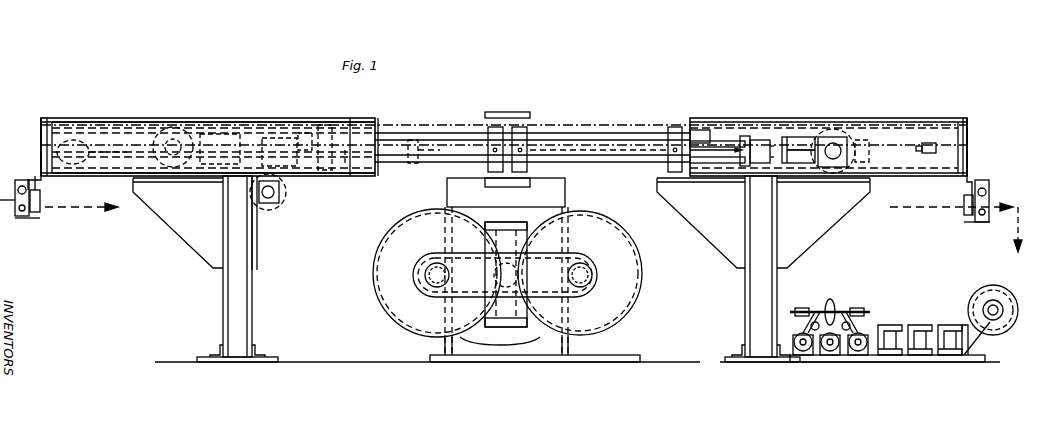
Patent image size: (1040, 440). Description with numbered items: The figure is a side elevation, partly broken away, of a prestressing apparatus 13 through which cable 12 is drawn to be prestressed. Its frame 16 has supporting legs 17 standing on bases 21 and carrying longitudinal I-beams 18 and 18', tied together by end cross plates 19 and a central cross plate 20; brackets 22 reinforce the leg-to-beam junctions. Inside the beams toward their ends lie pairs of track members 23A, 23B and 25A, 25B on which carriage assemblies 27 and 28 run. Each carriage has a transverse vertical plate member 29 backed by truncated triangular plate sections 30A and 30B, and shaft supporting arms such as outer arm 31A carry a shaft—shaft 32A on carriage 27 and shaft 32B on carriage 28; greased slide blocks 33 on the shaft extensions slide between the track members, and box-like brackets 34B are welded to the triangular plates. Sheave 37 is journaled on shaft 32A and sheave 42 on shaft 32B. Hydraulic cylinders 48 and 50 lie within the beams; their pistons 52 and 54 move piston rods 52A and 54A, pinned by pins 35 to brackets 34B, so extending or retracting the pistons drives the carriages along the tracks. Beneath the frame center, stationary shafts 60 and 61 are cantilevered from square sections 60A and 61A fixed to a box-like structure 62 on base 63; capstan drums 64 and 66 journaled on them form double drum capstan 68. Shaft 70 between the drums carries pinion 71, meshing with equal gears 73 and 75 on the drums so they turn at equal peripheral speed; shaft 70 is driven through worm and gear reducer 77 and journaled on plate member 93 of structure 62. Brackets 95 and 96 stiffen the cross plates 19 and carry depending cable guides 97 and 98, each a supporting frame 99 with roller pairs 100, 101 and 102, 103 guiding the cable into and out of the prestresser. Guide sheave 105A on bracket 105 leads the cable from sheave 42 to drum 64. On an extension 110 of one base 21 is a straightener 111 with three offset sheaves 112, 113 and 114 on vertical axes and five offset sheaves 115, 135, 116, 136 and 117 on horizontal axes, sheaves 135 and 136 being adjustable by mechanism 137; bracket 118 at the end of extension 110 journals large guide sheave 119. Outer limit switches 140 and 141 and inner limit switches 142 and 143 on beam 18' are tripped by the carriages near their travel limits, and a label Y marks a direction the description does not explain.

The cable 12 is at (88, 205).
The prestressing apparatus 13 is at (576, 103).
The frame 16 is at (372, 118).
The supporting legs 17 is at (223, 298).
The longitudinal beam 18 is at (346, 135).
The longitudinal beam 18' is at (828, 134).
The cross plates 19 is at (41, 140).
The cross plate 20 is at (510, 112).
The bases 21 is at (205, 362).
The brackets 22 is at (175, 232).
The track member 23A is at (860, 125).
The track member 23B is at (885, 168).
The track member 25A is at (130, 122).
The track member 25B is at (128, 176).
The carriage assembly 27 is at (725, 152).
The carriage assembly 28 is at (288, 135).
The transverse vertical plate member 29 is at (795, 137).
The transverse truncated triangular plate section 30A is at (735, 141).
The transverse truncated triangular plate section 30B is at (740, 163).
The outer shaft supporting arm 31A is at (800, 165).
The shaft 32A is at (870, 153).
The shaft 32B is at (200, 150).
The slide blocks 33 is at (178, 128).
The box-like bracket 34B is at (270, 138).
The pins 35 is at (750, 136).
The sheave 37 is at (832, 129).
The sheave 42 is at (110, 153).
The hydraulic cylinder 48 is at (628, 133).
The hydraulic cylinder 50 is at (415, 140).
The piston 52 is at (580, 150).
The piston rod 52A is at (640, 160).
The piston 54 is at (418, 150).
The piston rod 54A is at (345, 176).
The stationary shaft 60 is at (437, 275).
The square section 60A is at (428, 287).
The stationary shaft 61 is at (580, 275).
The square section 61A is at (590, 287).
The box-like supporting structure 62 is at (445, 343).
The base 63 is at (592, 355).
The capstan drum 64 is at (437, 273).
The capstan drum 66 is at (580, 273).
The double drum capstan 68 is at (500, 347).
The shaft 70 is at (506, 274).
The pinion 71 is at (520, 266).
The gear 73 is at (402, 216).
The gear 75 is at (642, 270).
The worm and gear reducer 77 is at (485, 268).
The plate member 93 is at (482, 207).
The bracket 95 is at (30, 178).
The bracket 96 is at (975, 180).
The cable guide 97 is at (8, 205).
The cable guide 98 is at (992, 230).
The supporting frame 99 is at (30, 218).
The roller 100 is at (14, 194).
The roller 101 is at (40, 205).
The roller 102 is at (989, 192).
The roller 103 is at (964, 208).
The bracket 105 is at (275, 203).
The guide sheave 105A is at (262, 215).
The base extension 110 is at (900, 362).
The straightener 111 is at (908, 297).
The offset sheave 112 is at (950, 325).
The offset sheave 113 is at (920, 325).
The offset sheave 114 is at (888, 325).
The offset sheave 115 is at (858, 351).
The offset sheave 116 is at (830, 351).
The offset sheave 117 is at (805, 351).
The bracket 118 is at (978, 345).
The large guide sheave 119 is at (990, 285).
The offset sheave 135 is at (812, 315).
The offset sheave 136 is at (848, 315).
The mechanism 137 is at (830, 299).
The outer trip limit switch 140 is at (933, 153).
The outer trip limit switch 141 is at (73, 152).
The inner trip limit switch 142 is at (700, 130).
The inner trip limit switch 143 is at (305, 133).
The direction Y is at (1017, 238).